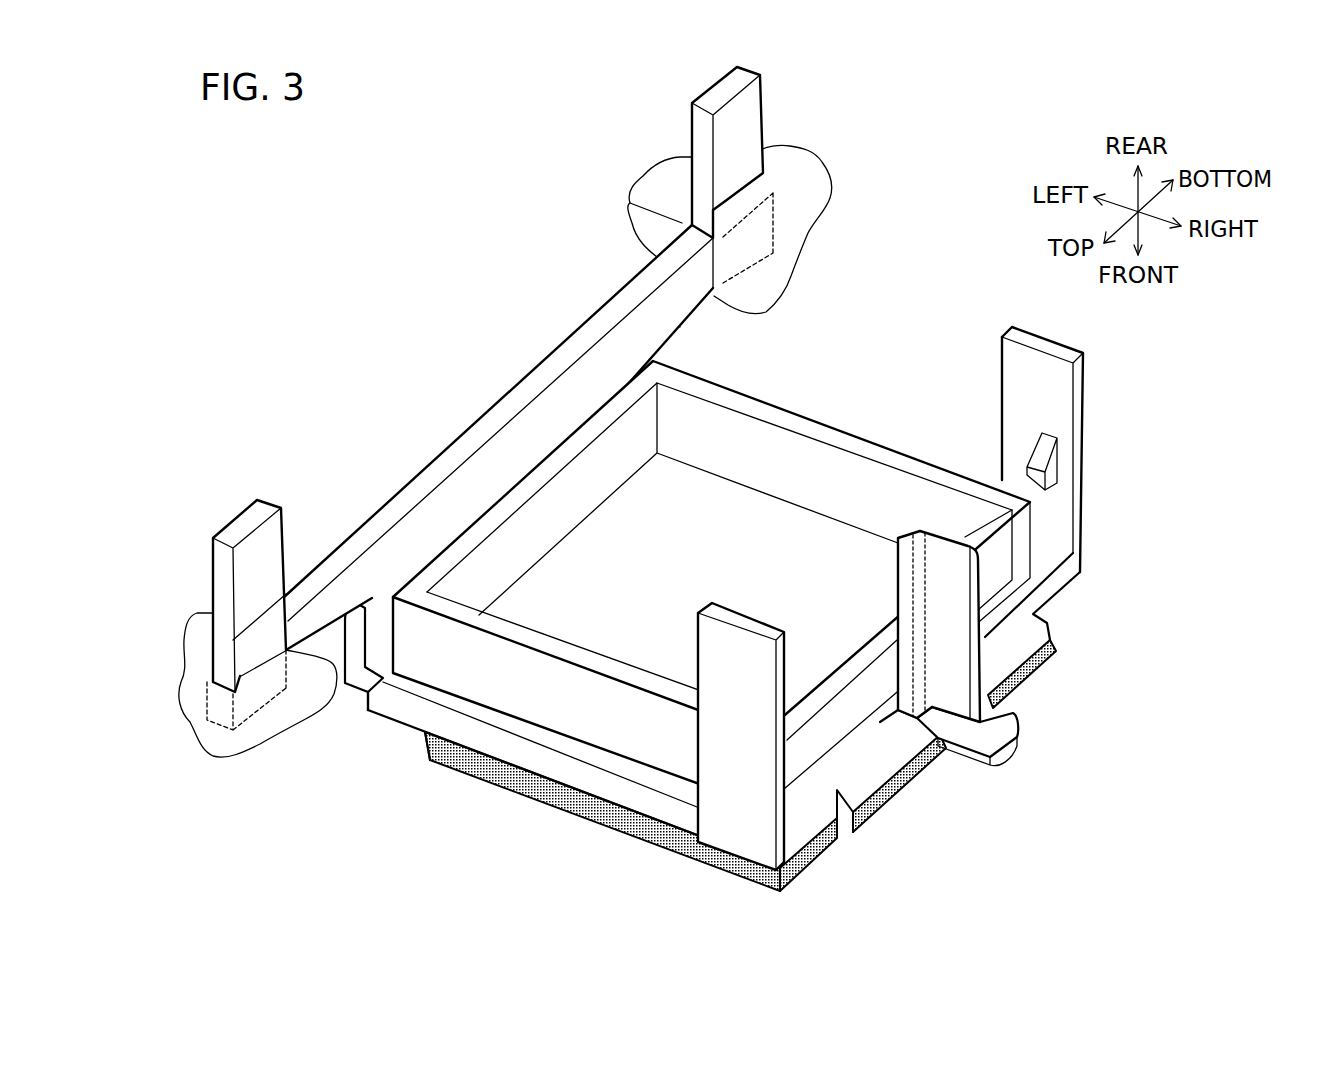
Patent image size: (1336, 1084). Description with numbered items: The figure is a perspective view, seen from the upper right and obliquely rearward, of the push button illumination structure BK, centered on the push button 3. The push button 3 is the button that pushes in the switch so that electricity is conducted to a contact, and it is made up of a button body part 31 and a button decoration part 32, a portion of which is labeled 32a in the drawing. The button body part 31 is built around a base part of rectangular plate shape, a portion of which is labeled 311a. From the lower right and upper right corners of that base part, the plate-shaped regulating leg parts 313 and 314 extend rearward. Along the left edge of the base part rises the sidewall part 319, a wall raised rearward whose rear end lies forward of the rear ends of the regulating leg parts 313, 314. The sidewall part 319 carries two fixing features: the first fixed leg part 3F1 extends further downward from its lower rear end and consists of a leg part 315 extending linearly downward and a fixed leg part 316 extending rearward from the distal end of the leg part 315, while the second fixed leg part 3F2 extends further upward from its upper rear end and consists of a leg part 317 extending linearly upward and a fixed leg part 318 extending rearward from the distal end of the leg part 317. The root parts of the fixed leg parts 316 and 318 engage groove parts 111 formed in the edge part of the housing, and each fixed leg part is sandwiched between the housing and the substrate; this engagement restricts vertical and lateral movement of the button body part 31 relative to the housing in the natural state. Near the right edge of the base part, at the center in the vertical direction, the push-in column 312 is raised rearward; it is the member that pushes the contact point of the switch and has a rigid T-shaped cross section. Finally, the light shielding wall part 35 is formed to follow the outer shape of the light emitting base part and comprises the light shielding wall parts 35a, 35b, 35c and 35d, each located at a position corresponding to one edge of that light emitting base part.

The push button 3 is at (966, 208).
The groove part 111 is at (773, 250).
The button body part 31 is at (1085, 590).
The hole of base portion 311a is at (775, 548).
The push-in column 312 is at (977, 587).
The regulating leg part 313 is at (1090, 397).
The regulating leg part 314 is at (790, 690).
The leg part 315 is at (657, 310).
The fixed leg part 316 is at (770, 110).
The leg part 317 is at (310, 623).
The fixed leg part 318 is at (293, 535).
The sidewall part 319 is at (472, 432).
The button decoration part 32 is at (720, 876).
The side face of plate 32a is at (567, 773).
The light shielding wall part 35 is at (885, 448).
The light shielding wall part 35a is at (600, 478).
The light shielding wall part 35b is at (863, 720).
The light shielding wall part 35c is at (635, 727).
The light shielding wall part 35d is at (853, 490).
The first fixed leg part 3F1 is at (610, 207).
The second fixed leg part 3F2 is at (228, 503).
The push button illumination structure BK is at (1132, 527).